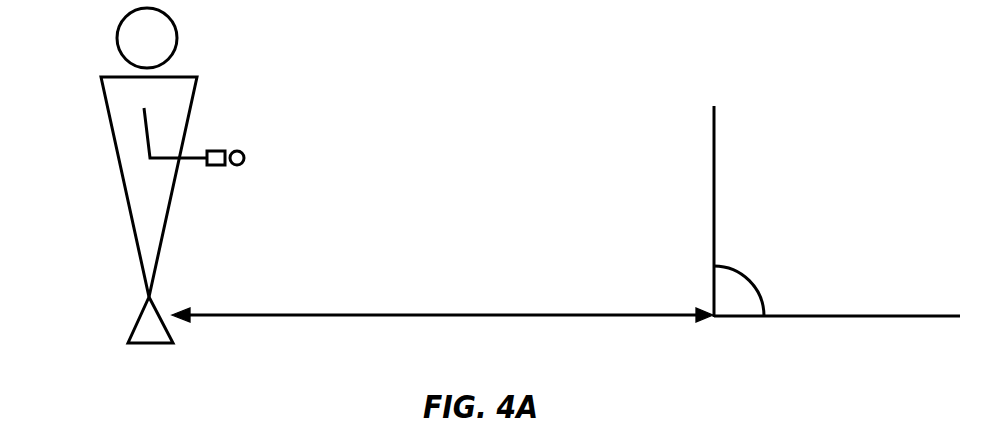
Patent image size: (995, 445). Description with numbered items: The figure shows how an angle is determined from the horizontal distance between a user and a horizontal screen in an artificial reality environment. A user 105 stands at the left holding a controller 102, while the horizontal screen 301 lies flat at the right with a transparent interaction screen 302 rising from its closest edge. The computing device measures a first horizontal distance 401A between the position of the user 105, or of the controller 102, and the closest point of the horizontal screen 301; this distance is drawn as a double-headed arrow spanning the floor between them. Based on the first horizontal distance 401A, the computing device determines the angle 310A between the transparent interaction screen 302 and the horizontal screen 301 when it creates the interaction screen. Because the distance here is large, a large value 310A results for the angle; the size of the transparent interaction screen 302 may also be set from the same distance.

The controller 102 is at (220, 147).
The user 105 is at (133, 222).
The horizontal screen 301 is at (856, 320).
The transparent interaction screen 302 is at (713, 150).
The angle 310A is at (757, 283).
The first horizontal distance 401A is at (448, 313).